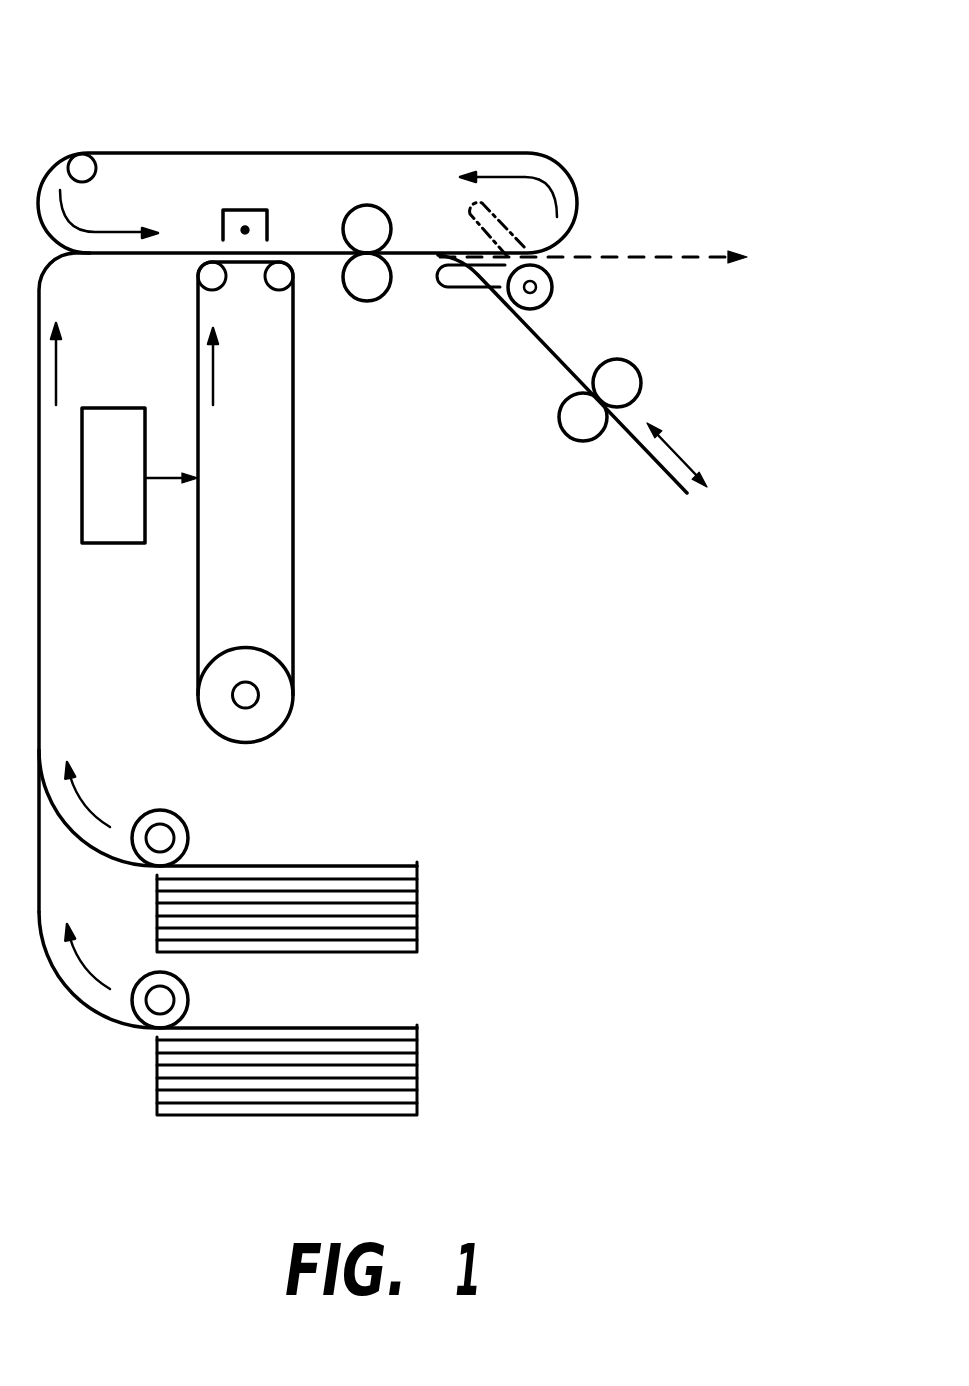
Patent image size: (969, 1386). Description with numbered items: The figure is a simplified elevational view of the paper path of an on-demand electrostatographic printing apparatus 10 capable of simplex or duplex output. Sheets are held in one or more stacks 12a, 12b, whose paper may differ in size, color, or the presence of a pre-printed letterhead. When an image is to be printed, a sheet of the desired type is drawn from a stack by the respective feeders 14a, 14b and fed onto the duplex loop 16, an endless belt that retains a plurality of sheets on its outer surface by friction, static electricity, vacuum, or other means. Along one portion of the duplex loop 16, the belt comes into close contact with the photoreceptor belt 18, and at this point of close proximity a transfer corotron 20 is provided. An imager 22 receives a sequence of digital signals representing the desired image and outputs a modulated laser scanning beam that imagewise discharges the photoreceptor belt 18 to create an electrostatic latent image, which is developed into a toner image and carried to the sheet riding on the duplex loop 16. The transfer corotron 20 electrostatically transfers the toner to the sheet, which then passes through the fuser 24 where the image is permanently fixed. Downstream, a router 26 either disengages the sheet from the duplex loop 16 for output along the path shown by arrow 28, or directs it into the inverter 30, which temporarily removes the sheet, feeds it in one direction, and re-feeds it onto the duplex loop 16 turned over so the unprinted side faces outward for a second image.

The printing apparatus 10 is at (184, 45).
The stack 12a is at (382, 867).
The stack 12b is at (385, 1037).
The feeder 14a is at (177, 822).
The feeder 14b is at (177, 984).
The duplex loop 16 is at (430, 153).
The photoreceptor belt 18 is at (293, 503).
The transfer corotron 20 is at (238, 208).
The imager 22 is at (98, 545).
The fuser 24 is at (363, 283).
The router 26 is at (546, 284).
The output path 28 is at (640, 257).
The inverter 30 is at (705, 390).